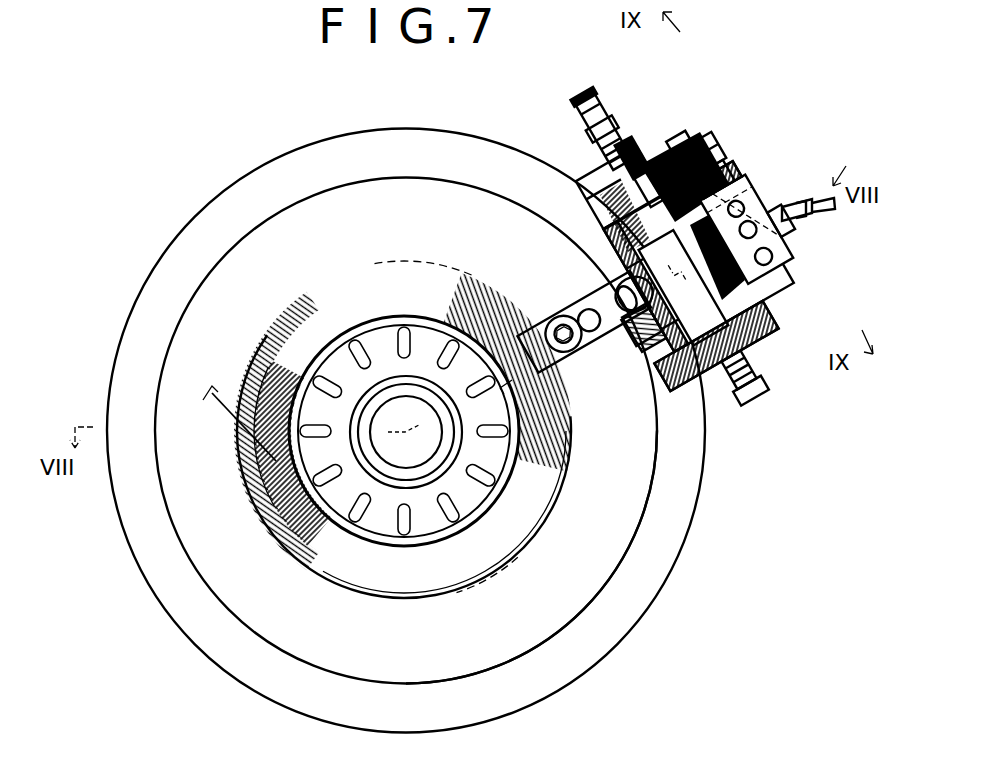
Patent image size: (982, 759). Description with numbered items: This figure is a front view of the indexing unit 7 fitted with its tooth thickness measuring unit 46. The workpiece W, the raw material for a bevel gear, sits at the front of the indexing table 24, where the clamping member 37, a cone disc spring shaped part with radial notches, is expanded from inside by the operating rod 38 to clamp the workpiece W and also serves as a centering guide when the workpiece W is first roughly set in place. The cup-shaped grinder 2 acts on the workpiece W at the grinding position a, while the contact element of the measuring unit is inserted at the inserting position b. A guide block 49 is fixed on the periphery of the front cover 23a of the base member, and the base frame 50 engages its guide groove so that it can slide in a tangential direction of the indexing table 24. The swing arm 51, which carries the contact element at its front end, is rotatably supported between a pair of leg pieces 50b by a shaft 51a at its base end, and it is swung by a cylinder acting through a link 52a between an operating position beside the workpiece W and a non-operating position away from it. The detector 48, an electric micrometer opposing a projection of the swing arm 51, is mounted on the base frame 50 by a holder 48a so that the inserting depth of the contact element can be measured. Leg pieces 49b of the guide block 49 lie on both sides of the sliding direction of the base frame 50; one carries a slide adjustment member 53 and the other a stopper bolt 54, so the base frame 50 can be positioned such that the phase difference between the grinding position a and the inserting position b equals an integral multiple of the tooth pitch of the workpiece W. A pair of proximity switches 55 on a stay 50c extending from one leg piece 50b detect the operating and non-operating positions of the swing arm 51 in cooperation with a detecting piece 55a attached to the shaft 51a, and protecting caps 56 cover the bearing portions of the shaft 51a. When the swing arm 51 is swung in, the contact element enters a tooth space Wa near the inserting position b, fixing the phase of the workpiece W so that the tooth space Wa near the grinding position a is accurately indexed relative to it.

The cup-shaped grinder 2 is at (213, 395).
The indexing unit 7 is at (716, 492).
The front cover 23a is at (630, 613).
The indexing table 24 is at (644, 508).
The clamping member 37 is at (385, 525).
The operating rod 38 is at (452, 465).
The tooth thickness measuring unit 46 is at (695, 280).
The detector 48 is at (762, 272).
The holder 48a is at (737, 232).
The guide block 49 is at (586, 176).
The leg pieces 49b is at (640, 176).
The base frame 50 is at (792, 258).
The leg pieces 50b is at (616, 256).
The stay 50c is at (726, 190).
The swing arm 51 is at (586, 366).
The shaft 51a is at (582, 384).
The link 52a is at (736, 205).
The slide adjustment member 53 is at (598, 104).
The stopper bolt 54 is at (762, 386).
The proximity switches 55 is at (706, 170).
The detecting piece 55a is at (690, 150).
The protecting caps 56 is at (600, 230).
The grinding position a is at (256, 450).
The inserting position b is at (500, 390).
The workpiece W is at (274, 542).
The tooth space Wa is at (263, 461).